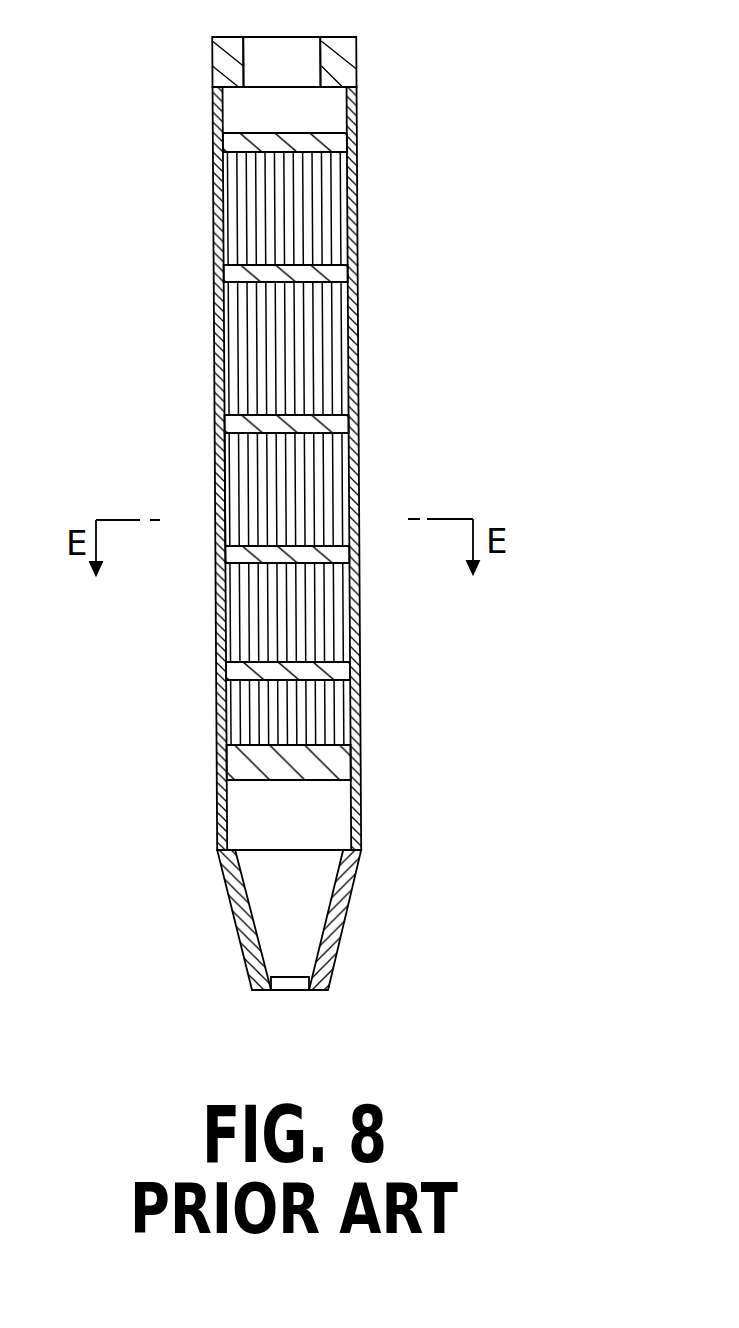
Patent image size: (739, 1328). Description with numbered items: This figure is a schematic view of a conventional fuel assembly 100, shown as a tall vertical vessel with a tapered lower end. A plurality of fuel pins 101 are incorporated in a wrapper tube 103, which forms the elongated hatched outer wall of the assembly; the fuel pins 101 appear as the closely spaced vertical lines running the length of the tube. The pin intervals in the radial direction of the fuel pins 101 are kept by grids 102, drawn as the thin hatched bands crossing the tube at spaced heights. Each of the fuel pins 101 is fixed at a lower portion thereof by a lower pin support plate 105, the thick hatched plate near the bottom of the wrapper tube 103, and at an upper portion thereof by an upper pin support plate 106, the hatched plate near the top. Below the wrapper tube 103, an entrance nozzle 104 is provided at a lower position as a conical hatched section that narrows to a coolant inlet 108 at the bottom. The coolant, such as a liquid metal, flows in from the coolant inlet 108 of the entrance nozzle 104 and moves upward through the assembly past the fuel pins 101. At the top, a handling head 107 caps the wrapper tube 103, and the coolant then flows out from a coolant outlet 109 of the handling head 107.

The fuel assembly 100 is at (176, 209).
The fuel pins 101 is at (253, 490).
The grids 102 is at (213, 277).
The wrapper tube 103 is at (215, 453).
The entrance nozzle 104 is at (233, 917).
The lower pin support plate 105 is at (226, 768).
The upper pin support plate 106 is at (213, 148).
The handling head 107 is at (357, 61).
The coolant inlet 108 is at (289, 995).
The coolant outlet 109 is at (273, 37).